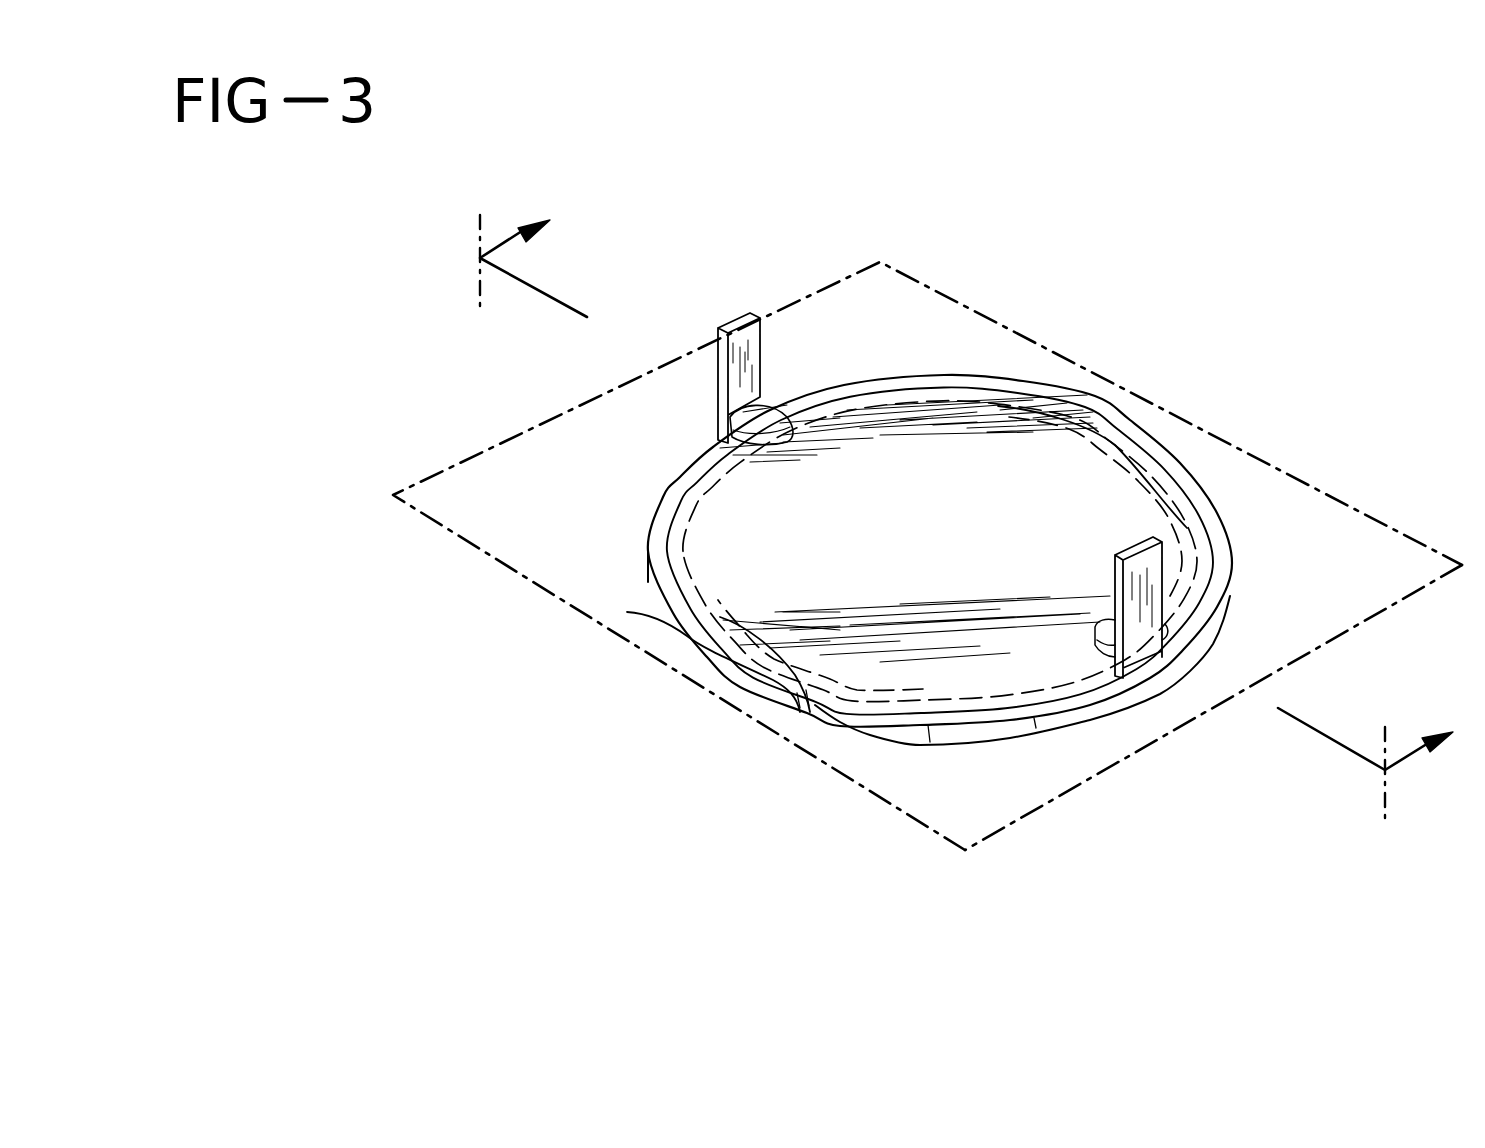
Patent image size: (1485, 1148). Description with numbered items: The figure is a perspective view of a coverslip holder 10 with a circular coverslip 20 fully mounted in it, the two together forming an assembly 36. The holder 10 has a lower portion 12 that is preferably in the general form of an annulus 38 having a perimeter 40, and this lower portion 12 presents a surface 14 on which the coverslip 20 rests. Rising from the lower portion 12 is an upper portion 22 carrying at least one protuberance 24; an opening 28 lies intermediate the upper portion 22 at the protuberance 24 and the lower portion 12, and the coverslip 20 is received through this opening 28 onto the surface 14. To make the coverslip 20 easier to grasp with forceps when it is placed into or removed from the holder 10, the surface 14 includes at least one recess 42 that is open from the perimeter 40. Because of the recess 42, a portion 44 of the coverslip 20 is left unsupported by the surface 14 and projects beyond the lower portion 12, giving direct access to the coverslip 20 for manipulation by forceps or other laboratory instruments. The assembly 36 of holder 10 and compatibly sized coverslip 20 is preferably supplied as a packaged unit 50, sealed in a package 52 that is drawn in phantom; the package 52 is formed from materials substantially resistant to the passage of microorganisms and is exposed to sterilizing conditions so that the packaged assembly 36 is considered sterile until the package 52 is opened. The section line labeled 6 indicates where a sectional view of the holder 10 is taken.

The section line 6- 6 is at (950, 520).
The coverslip holder 10 is at (873, 572).
The lower portion 12 is at (873, 740).
The surface 14 is at (1207, 500).
The coverslip 20 is at (1115, 442).
The upper portion 22 is at (753, 362).
The protuberance 24 is at (745, 432).
The opening 28 is at (1095, 682).
The assembly 36 is at (633, 639).
The annulus 38 is at (662, 498).
The perimeter 40 is at (648, 577).
The recess 42 is at (627, 612).
The portion of coverslip 44 is at (762, 677).
The packaged unit 50 is at (526, 771).
The package 52 is at (895, 812).